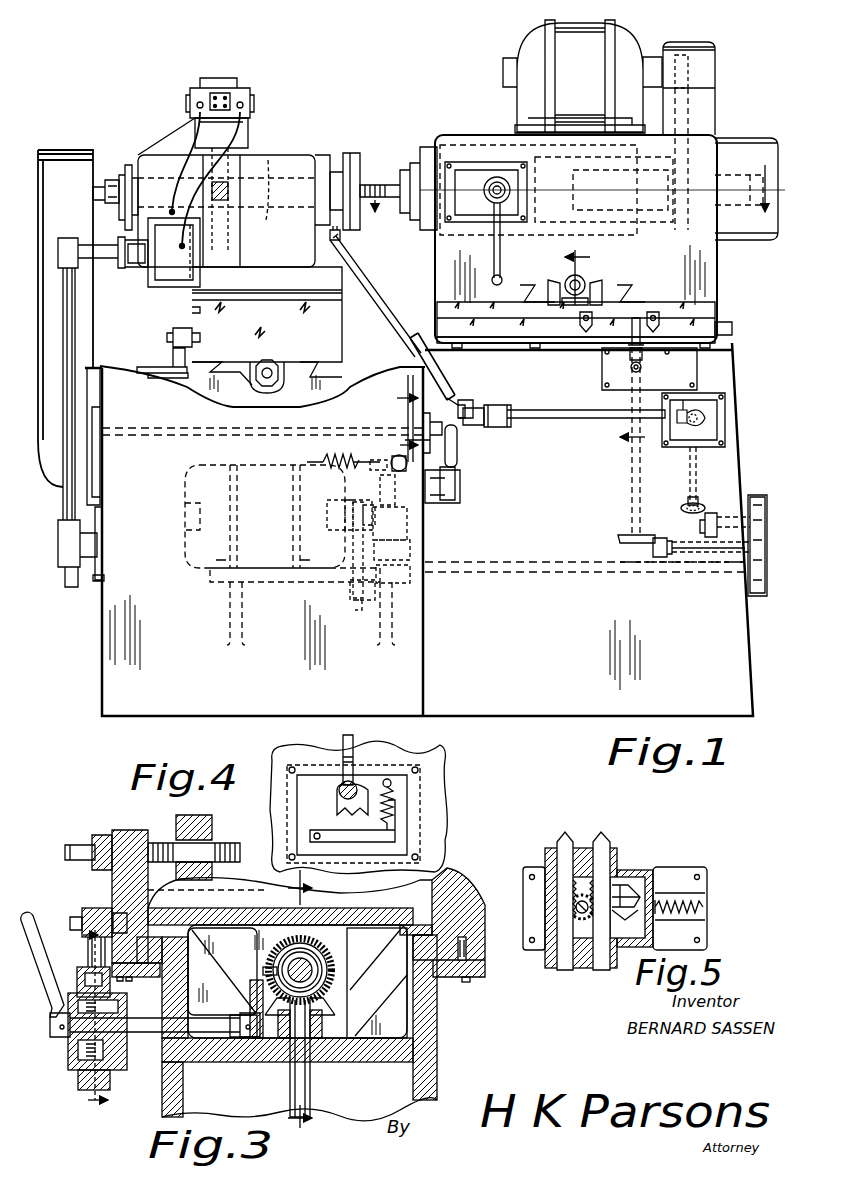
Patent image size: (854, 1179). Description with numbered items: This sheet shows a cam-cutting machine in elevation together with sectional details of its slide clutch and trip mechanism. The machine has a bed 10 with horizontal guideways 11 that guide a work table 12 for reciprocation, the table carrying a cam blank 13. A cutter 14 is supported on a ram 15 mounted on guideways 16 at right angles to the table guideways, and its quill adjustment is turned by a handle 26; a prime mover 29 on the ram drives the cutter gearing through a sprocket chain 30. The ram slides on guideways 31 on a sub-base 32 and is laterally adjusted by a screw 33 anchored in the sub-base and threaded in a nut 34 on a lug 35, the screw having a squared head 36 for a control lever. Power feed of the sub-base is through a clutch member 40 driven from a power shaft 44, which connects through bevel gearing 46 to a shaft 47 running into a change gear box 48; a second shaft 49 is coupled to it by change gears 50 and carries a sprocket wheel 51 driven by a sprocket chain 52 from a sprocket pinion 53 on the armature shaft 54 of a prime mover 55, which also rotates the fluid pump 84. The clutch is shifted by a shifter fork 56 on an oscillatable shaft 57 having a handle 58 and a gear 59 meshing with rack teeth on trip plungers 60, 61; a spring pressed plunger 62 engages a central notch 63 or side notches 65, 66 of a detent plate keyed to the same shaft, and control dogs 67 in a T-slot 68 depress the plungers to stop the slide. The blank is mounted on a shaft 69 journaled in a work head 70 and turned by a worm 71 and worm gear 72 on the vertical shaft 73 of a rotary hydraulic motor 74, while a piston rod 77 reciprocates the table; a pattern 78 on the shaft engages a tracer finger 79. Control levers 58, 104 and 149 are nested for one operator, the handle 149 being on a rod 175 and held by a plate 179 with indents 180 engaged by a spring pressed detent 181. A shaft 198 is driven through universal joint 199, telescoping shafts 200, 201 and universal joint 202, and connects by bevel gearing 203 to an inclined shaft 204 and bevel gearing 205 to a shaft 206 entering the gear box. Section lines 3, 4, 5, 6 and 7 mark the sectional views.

In FIG. 1, the bed 10 is at (722, 458).
In FIG. 1, the horizontal guideways 11 is at (318, 365).
In FIG. 1, the work table 12 is at (325, 328).
In FIG. 1, the cam blank 13 is at (352, 155).
In FIG. 1, the cutter 14 is at (376, 185).
In FIG. 1, the ram 15 is at (708, 274).
In FIG. 1, the guideways 16 is at (728, 325).
In FIG. 1, the handle 26 is at (502, 270).
In FIG. 1, the prime mover 29 is at (563, 48).
In FIG. 1, the sprocket chain 30 is at (690, 118).
In FIG. 1, the guideways 31 is at (630, 293).
In FIG. 1, the sub-base 32 is at (702, 308).
In FIG. 4, the sub-base 32 is at (108, 830).
In FIG. 3, the sub-base 32 is at (450, 875).
In FIG. 4, the screw 33 is at (150, 842).
In FIG. 4, the nut 34 is at (210, 844).
In FIG. 4, the lug 35 is at (190, 812).
In FIG. 4, the squared head 36 is at (68, 847).
In FIG. 3, the clutch member 40 is at (337, 978).
In FIG. 1, the power shaft 44 is at (640, 480).
In FIG. 1, the bevel gearing 46 is at (660, 538).
In FIG. 1, the shaft 47 is at (702, 555).
In FIG. 1, the change gear box 48 is at (757, 594).
In FIG. 1, the second shaft 49 is at (678, 565).
In FIG. 1, the change gears 50 is at (757, 540).
In FIG. 1, the sprocket wheel 51 is at (352, 598).
In FIG. 1, the sprocket chain 52 is at (355, 545).
In FIG. 1, the sprocket pinion 53 is at (343, 508).
In FIG. 1, the armature shaft 54 is at (345, 528).
In FIG. 1, the prime mover 55 is at (258, 478).
In FIG. 3, the shifter fork 56 is at (257, 978).
In FIG. 3, the oscillatable shaft 57 is at (152, 1022).
In FIG. 3, the handle 58 is at (40, 915).
In FIG. 5, the gear 59 is at (582, 920).
In FIG. 5, the trip plunger 60 is at (557, 850).
In FIG. 5, the trip plunger 61 is at (604, 845).
In FIG. 5, the spring pressed plunger 62 is at (640, 878).
In FIG. 5, the central notch 63 is at (625, 921).
In FIG. 5, the notch 65 is at (633, 886).
In FIG. 5, the notch 66 is at (665, 915).
In FIG. 1, the control dogs 67 is at (655, 318).
In FIG. 1, the T-slot 68 is at (492, 335).
In FIG. 1, the shaft 69 is at (270, 160).
In FIG. 1, the work head 70 is at (298, 130).
In FIG. 1, the worm 71 is at (228, 215).
In FIG. 1, the worm gear 72 is at (220, 243).
In FIG. 1, the vertical shaft 73 is at (225, 125).
In FIG. 1, the prime mover 74 is at (233, 92).
In FIG. 1, the piston rod 77 is at (262, 390).
In FIG. 1, the pattern 78 is at (130, 165).
In FIG. 1, the tracer finger 79 is at (112, 180).
In FIG. 1, the fluid pump 84 is at (405, 528).
In FIG. 1, the operating handle 104 is at (455, 430).
In FIG. 1, the operating handle 149 is at (412, 390).
In FIG. 3, the operating handle 149 is at (354, 738).
In FIG. 1, the rod 175 is at (134, 432).
In FIG. 3, the plate 179 is at (362, 788).
In FIG. 3, the indents 180 is at (340, 812).
In FIG. 3, the spring pressed detent 181 is at (343, 838).
In FIG. 1, the shaft 198 is at (515, 412).
In FIG. 1, the universal joint 199 is at (476, 402).
In FIG. 1, the telescoping shaft 200 is at (412, 350).
In FIG. 1, the telescoping shaft 201 is at (372, 272).
In FIG. 1, the universal joint 202 is at (342, 236).
In FIG. 1, the bevel gearing 203 is at (700, 405).
In FIG. 1, the inclined shaft 204 is at (698, 460).
In FIG. 1, the bevel gearing 205 is at (705, 505).
In FIG. 1, the shaft 206 is at (722, 513).
In FIG. 1, the section line 3— 3 is at (595, 348).
In FIG. 1, the section line 4— 4 is at (400, 422).
In FIG. 3, the section line 5— 5 is at (101, 1015).
In FIG. 3, the section line 6— 6 is at (307, 999).
In FIG. 1, the section line 7— 7 is at (566, 200).